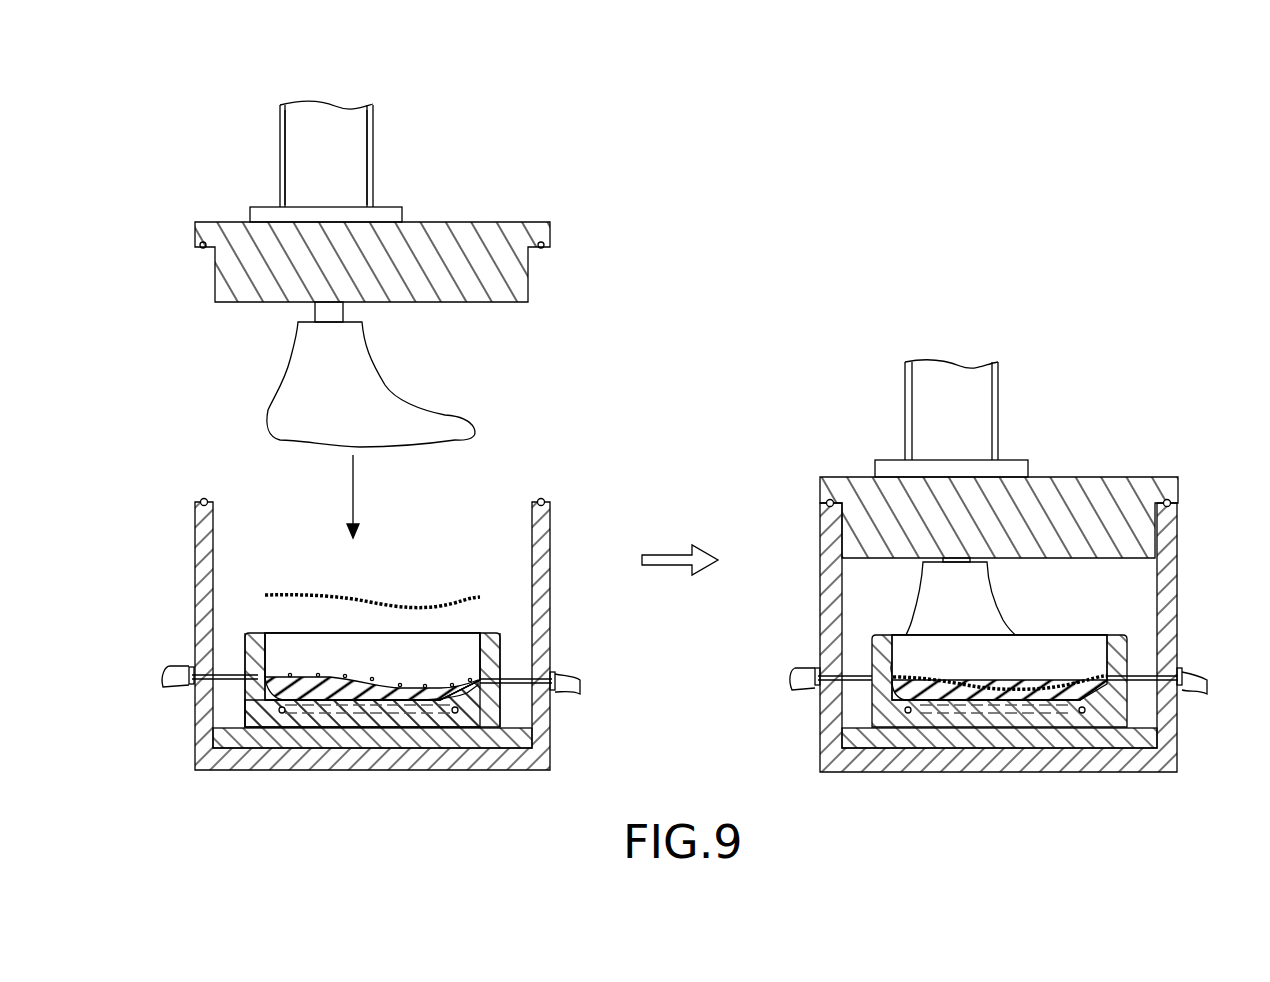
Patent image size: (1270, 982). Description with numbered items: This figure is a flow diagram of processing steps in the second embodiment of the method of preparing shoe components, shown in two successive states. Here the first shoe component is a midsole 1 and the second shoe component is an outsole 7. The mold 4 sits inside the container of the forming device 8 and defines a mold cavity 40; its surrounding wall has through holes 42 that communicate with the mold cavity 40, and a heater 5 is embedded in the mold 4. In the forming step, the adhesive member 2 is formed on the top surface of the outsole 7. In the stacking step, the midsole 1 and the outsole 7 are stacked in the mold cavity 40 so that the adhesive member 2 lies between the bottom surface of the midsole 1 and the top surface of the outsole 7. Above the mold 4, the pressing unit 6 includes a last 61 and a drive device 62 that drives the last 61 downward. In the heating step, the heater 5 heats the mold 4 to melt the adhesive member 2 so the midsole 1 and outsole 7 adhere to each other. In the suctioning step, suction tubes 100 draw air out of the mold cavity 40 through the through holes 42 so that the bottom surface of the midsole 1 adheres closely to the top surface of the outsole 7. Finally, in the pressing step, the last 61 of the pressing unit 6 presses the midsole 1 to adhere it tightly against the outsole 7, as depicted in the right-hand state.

The midsole 1 is at (458, 607).
The adhesive member 2 is at (287, 677).
The mold 4 is at (500, 703).
The mold cavity 40 is at (462, 650).
The through hole 42 is at (256, 680).
The heater 5 is at (325, 713).
The pressing unit 6 is at (376, 133).
The last 61 is at (373, 370).
The drive device 62 is at (373, 175).
The outsole 7 is at (480, 682).
The forming device 8 is at (552, 538).
The suction tube 100 is at (175, 687).